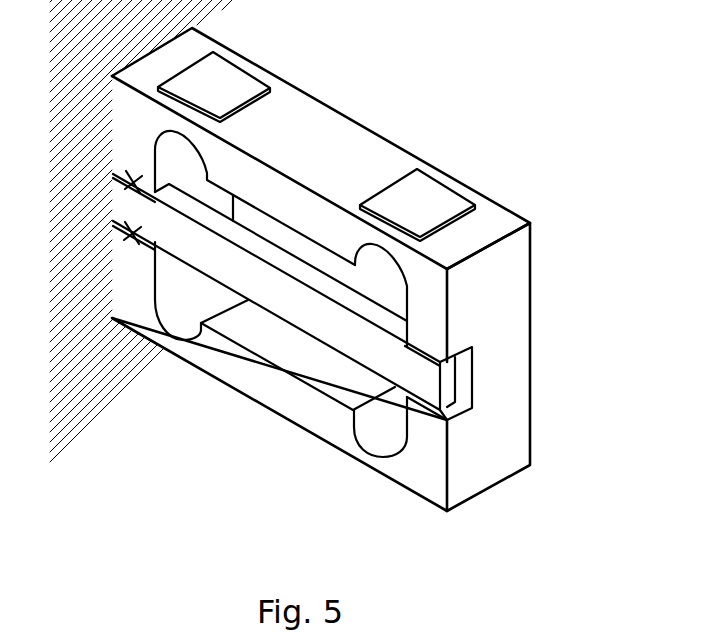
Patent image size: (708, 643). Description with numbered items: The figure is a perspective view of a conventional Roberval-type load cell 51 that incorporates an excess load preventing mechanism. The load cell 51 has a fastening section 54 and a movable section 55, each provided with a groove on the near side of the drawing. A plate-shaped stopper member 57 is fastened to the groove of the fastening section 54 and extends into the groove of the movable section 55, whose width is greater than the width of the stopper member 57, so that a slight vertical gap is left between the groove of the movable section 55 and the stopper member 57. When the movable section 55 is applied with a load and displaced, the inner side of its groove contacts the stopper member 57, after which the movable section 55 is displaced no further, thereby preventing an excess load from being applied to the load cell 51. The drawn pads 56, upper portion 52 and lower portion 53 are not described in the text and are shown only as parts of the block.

The load cell 51 is at (543, 170).
The upper block part 52 is at (335, 142).
The lower block part 53 is at (327, 417).
The fastening section 54 is at (123, 127).
The movable section 55 is at (502, 393).
The pad 56 is at (225, 88).
The stopper member 57 is at (270, 298).